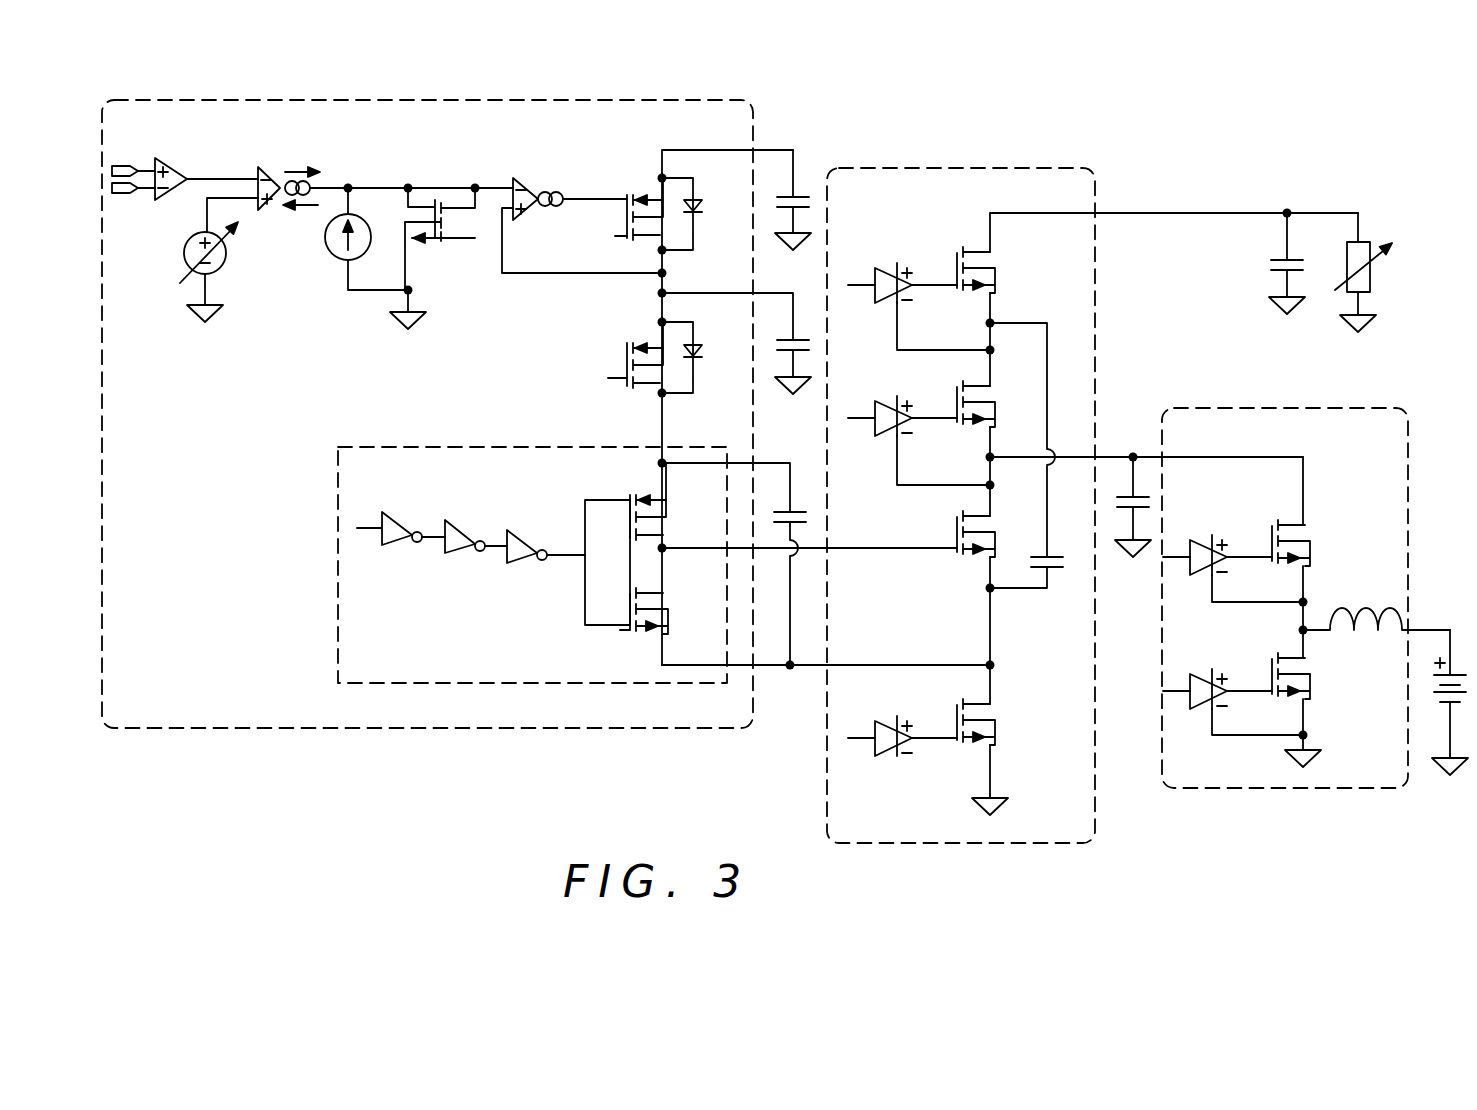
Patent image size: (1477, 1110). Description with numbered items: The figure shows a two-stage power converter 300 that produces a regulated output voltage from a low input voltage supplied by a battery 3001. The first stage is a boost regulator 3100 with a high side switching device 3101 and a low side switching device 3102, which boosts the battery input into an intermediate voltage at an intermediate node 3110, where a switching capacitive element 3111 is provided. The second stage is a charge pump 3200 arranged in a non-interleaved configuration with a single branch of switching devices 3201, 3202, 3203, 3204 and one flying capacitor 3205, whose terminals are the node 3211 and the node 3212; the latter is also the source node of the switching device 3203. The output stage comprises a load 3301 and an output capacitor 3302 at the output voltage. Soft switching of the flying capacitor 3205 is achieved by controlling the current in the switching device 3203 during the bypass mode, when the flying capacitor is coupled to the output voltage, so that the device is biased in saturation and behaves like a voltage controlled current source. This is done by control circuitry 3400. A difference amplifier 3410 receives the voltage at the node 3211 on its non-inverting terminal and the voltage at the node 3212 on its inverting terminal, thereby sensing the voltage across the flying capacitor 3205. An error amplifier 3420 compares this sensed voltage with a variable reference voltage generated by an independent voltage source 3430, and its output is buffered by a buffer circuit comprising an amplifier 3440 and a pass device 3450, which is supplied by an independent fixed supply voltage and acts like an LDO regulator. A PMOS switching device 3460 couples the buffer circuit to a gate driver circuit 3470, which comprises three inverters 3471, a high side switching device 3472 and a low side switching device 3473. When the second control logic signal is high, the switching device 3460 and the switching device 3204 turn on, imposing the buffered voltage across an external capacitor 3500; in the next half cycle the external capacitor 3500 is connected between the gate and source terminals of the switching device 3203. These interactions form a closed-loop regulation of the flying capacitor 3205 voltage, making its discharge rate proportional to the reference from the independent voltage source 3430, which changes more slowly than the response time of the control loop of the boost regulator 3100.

The two-stage power converter 300 is at (307, 68).
The control circuitry 3400 is at (500, 733).
The node 3211 is at (122, 166).
The node 3212 is at (122, 193).
The difference amplifier 3410 is at (178, 166).
The error amplifier 3420 is at (278, 167).
The independent voltage source 3430 is at (185, 250).
The amplifier 3440 is at (530, 181).
The pass device 3450 is at (615, 236).
The switching device 3460 is at (608, 378).
The gate driver circuit 3470 is at (338, 612).
The inverters 3471 is at (495, 572).
The high side switching device 3472 is at (617, 493).
The low side switching device 3473 is at (625, 630).
The external capacitor 3500 is at (795, 505).
The charge pump 3200 is at (1027, 168).
The switching device 3201 is at (952, 253).
The switching device 3202 is at (952, 387).
The switching device 3203 is at (952, 517).
The switching device 3204 is at (996, 716).
The flying capacitor 3205 is at (1063, 563).
The intermediate node 3110 is at (1133, 456).
The switching capacitive element 3111 is at (1130, 503).
The boost regulator 3100 is at (1355, 408).
The high side switching device 3101 is at (1265, 526).
The low side switching device 3102 is at (1306, 667).
The load 3301 is at (1378, 270).
The output capacitor 3302 is at (1272, 258).
The battery 3001 is at (1440, 712).